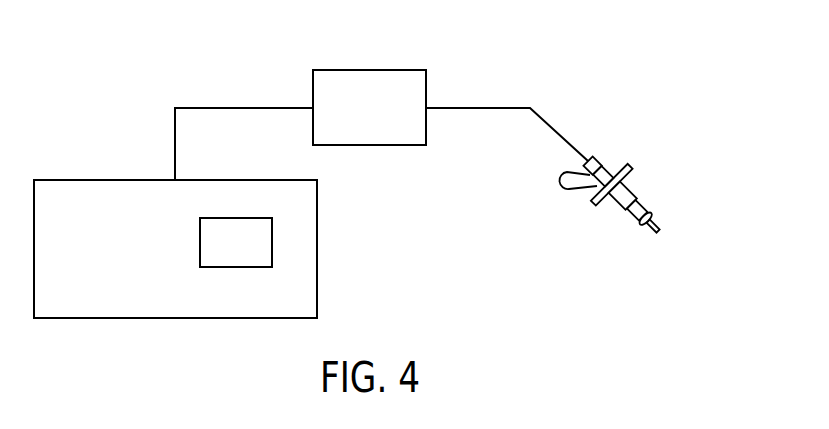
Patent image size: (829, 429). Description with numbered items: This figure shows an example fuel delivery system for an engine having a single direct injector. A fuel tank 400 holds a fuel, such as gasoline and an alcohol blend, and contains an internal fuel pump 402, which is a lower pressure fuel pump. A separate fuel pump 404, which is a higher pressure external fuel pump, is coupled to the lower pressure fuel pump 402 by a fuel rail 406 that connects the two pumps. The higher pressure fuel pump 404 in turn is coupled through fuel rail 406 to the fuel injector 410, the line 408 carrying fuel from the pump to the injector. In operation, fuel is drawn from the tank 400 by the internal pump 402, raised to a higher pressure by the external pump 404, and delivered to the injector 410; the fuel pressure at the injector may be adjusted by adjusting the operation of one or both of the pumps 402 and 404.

The fuel tank 400 is at (143, 304).
The internal fuel pump 402 is at (250, 256).
The fuel pump 404 is at (383, 119).
The fuel rail 406 is at (193, 107).
The cable 408 is at (512, 107).
The fuel injectors 410 is at (631, 188).